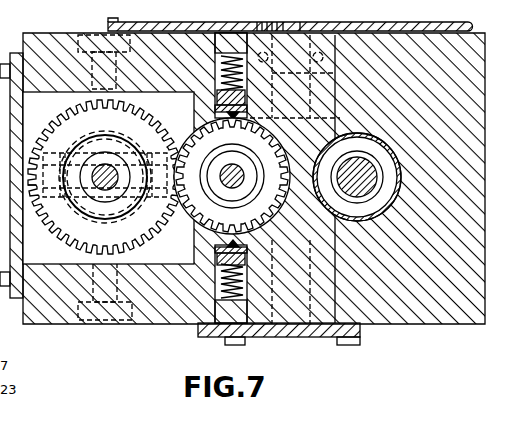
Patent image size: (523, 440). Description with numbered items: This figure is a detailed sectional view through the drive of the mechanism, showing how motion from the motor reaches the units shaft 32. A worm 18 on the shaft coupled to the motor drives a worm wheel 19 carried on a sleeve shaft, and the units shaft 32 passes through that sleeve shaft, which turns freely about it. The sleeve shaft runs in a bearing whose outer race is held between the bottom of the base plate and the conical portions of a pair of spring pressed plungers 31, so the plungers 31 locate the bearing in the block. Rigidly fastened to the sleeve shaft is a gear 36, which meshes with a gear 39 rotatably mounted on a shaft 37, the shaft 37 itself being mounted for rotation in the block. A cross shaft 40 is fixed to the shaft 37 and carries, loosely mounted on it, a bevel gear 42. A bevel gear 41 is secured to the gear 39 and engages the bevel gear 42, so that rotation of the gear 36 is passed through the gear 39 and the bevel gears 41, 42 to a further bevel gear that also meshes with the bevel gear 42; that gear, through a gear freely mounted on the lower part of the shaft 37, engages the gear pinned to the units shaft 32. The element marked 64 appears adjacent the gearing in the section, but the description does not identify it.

The worm 18 is at (262, 216).
The worm wheel 19 is at (357, 120).
The spring pressed plungers 31 is at (230, 245).
The units shaft 32 is at (192, 224).
The gear 36 is at (273, 140).
The shaft 37 is at (100, 187).
The gear 39 is at (137, 125).
The cross shaft 40 is at (51, 224).
The bevel gear 41 is at (55, 114).
The bevel gear 42 is at (57, 130).
The roller bearing 64 is at (366, 180).